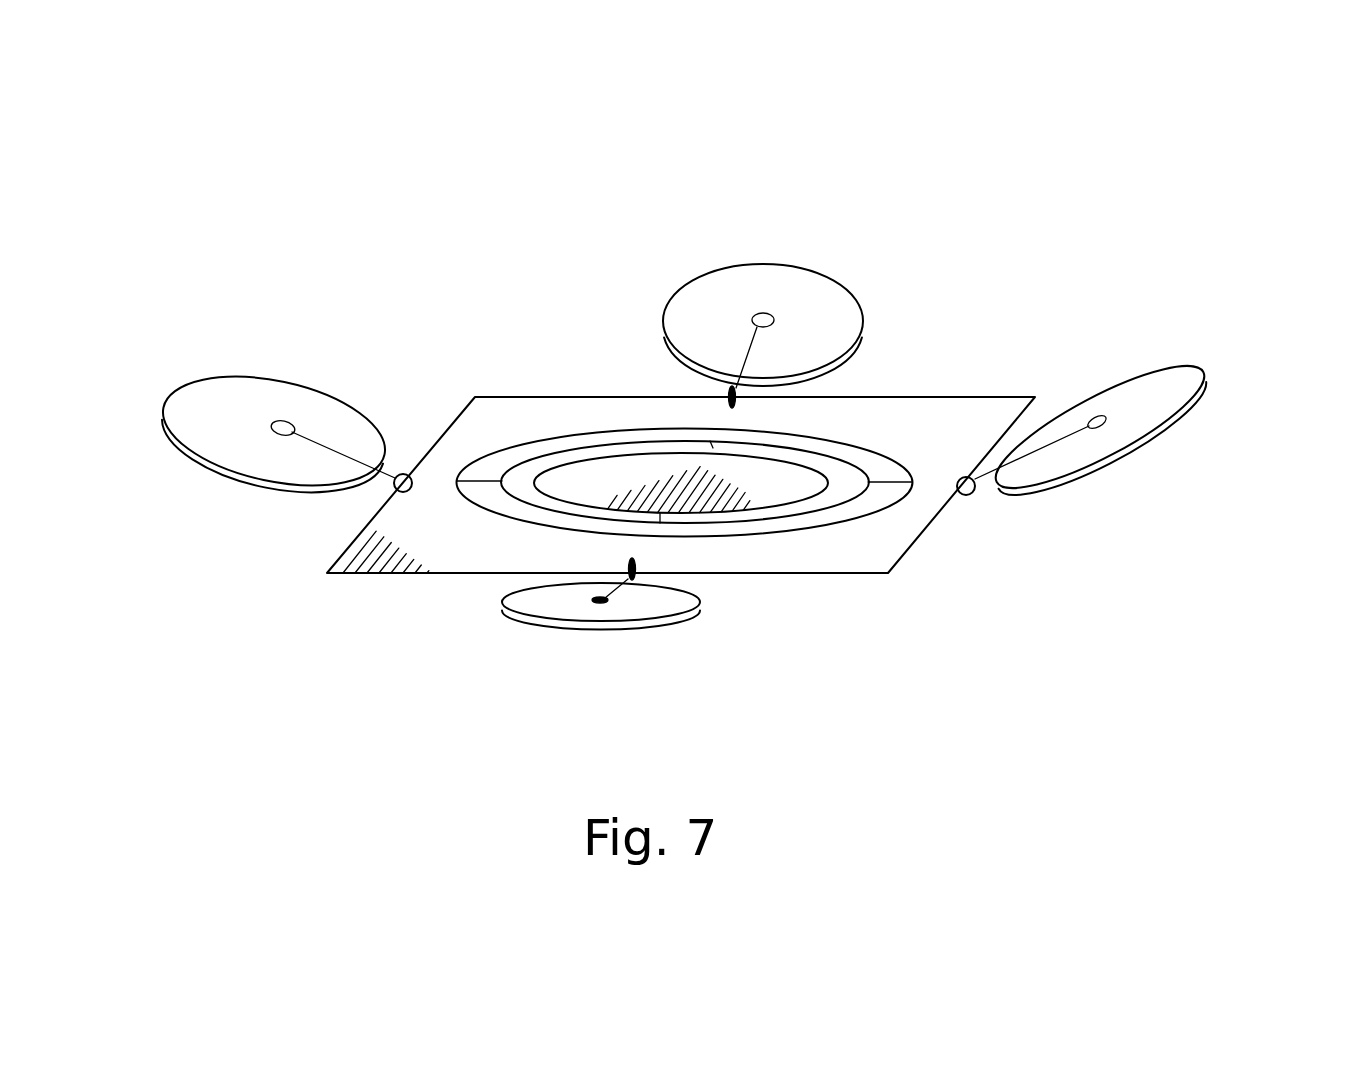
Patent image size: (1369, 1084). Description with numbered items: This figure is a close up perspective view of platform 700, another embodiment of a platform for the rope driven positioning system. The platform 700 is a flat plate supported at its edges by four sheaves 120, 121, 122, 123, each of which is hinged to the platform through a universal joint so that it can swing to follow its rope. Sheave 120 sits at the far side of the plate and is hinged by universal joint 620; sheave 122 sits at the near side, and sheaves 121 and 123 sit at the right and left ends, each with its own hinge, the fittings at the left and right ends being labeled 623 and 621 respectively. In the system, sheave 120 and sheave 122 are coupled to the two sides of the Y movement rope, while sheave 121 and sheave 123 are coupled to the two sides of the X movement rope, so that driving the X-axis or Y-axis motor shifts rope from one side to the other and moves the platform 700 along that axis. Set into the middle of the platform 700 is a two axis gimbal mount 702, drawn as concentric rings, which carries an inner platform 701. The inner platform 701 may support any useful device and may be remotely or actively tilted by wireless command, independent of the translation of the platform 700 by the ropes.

The platform 700 is at (888, 583).
The inner platform 701 is at (597, 465).
The two axis gimbal mount 702 is at (860, 468).
The universal joint 620 is at (720, 390).
The sheave 120 is at (763, 247).
The sheave 121 is at (1210, 370).
The sheave 122 is at (497, 605).
The sheave 123 is at (162, 387).
The right pivot 621 is at (975, 500).
The left pivot 623 is at (392, 490).